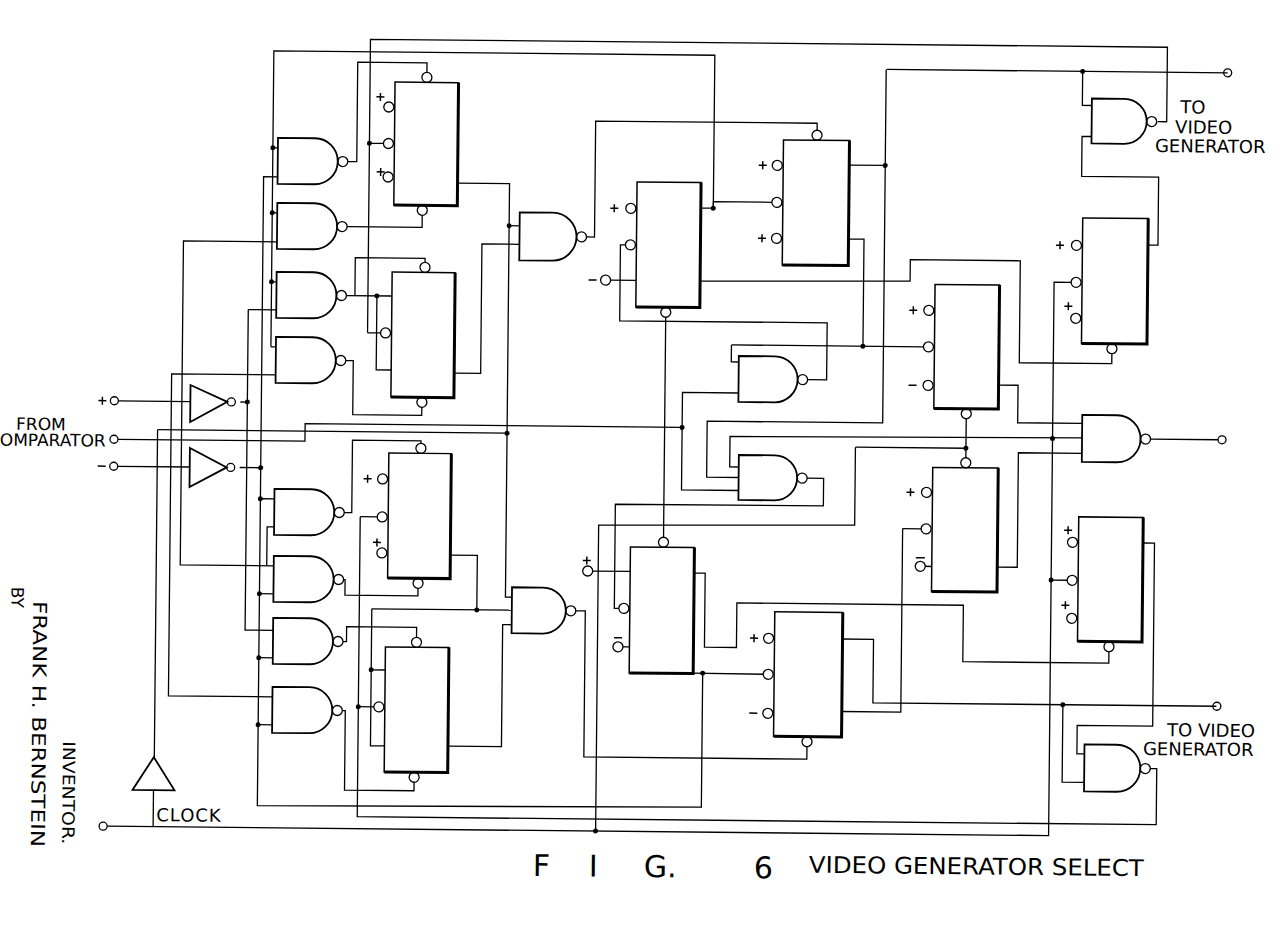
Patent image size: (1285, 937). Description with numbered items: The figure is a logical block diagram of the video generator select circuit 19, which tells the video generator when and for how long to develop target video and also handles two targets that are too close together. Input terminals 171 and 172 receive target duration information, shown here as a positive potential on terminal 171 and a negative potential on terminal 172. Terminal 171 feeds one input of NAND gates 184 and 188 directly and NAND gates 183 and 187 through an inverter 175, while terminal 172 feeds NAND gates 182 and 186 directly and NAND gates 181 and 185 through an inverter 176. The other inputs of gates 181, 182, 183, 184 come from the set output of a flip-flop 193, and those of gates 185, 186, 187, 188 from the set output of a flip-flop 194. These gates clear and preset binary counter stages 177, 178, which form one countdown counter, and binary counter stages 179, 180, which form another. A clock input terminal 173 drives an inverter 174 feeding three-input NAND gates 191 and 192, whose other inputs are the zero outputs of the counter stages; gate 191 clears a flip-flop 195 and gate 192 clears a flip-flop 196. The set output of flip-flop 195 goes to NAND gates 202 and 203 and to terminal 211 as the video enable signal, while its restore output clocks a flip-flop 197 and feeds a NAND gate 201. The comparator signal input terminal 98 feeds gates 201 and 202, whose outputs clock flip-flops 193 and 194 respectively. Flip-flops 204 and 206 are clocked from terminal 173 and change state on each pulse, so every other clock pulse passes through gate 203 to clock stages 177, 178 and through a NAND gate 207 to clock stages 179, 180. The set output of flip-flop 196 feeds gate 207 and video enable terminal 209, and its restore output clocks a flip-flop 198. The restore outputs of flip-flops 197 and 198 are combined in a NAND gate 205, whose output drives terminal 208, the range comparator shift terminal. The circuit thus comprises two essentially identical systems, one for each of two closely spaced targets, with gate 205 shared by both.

The video generator select circuit 19 is at (1200, 877).
The comparator signal input terminal 98 is at (118, 442).
The input terminal 171 is at (116, 403).
The input terminal 172 is at (116, 470).
The clock input terminal 173 is at (108, 831).
The inverter 174 is at (163, 781).
The inverter 175 is at (205, 404).
The inverter 176 is at (207, 469).
The binary counter stage 177 is at (453, 120).
The binary counter stage 178 is at (459, 392).
The binary counter stage 179 is at (449, 500).
The binary counter stage 180 is at (446, 696).
The NAND gate 181 is at (317, 176).
The NAND gate 182 is at (317, 242).
The NAND gate 183 is at (317, 310).
The NAND gate 184 is at (317, 376).
The NAND gate 185 is at (317, 528).
The NAND gate 186 is at (317, 594).
The NAND gate 187 is at (317, 656).
The NAND gate 188 is at (317, 726).
The NAND gate 191 is at (528, 224).
The NAND gate 192 is at (530, 599).
The flip-flop 193 is at (647, 197).
The flip-flop 194 is at (692, 573).
The flip-flop 195 is at (821, 189).
The flip-flop 196 is at (841, 745).
The flip-flop 197 is at (919, 404).
The flip-flop 198 is at (984, 596).
The NAND gate 201 is at (779, 390).
The NAND gate 202 is at (780, 488).
The NAND gate 203 is at (1129, 128).
The flip-flop 204 is at (1140, 292).
The NAND gate 205 is at (1122, 446).
The flip-flop 206 is at (1122, 516).
The NAND gate 207 is at (1128, 776).
The output terminal 208 is at (1217, 432).
The video enable terminal 209 is at (1215, 698).
The terminal 211 is at (1220, 64).